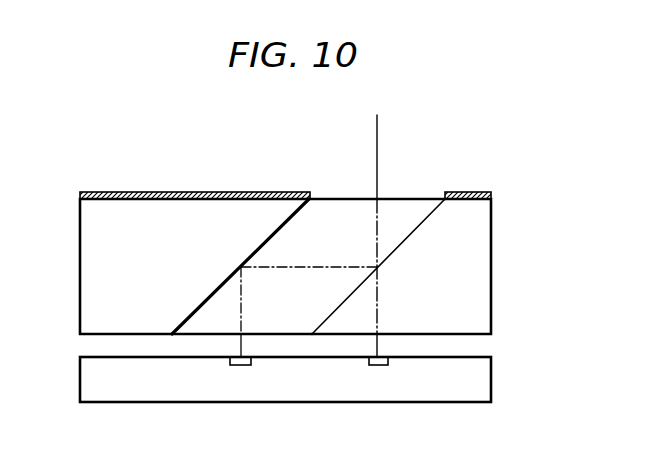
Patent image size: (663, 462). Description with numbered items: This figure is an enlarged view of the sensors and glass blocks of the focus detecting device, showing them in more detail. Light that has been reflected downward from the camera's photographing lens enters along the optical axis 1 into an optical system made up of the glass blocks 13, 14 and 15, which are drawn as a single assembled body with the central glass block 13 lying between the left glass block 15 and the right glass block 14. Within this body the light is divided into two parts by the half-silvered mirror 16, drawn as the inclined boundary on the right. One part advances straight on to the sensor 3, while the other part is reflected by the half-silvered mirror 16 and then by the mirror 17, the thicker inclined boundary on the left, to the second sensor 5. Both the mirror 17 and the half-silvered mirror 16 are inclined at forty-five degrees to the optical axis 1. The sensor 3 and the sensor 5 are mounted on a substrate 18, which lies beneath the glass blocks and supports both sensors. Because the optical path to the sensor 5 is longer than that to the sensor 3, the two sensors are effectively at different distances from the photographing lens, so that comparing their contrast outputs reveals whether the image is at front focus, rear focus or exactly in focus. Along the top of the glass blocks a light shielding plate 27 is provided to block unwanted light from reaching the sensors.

The optical axis 1 is at (377, 157).
The sensor 3 is at (380, 365).
The sensor 5 is at (243, 365).
The glass block 13 is at (343, 266).
The glass block 14 is at (401, 266).
The glass block 15 is at (196, 266).
The half-silvered mirror 16 is at (405, 240).
The mirror 17 is at (263, 242).
The substrate 18 is at (491, 378).
The light shielding plate 27 is at (268, 191).